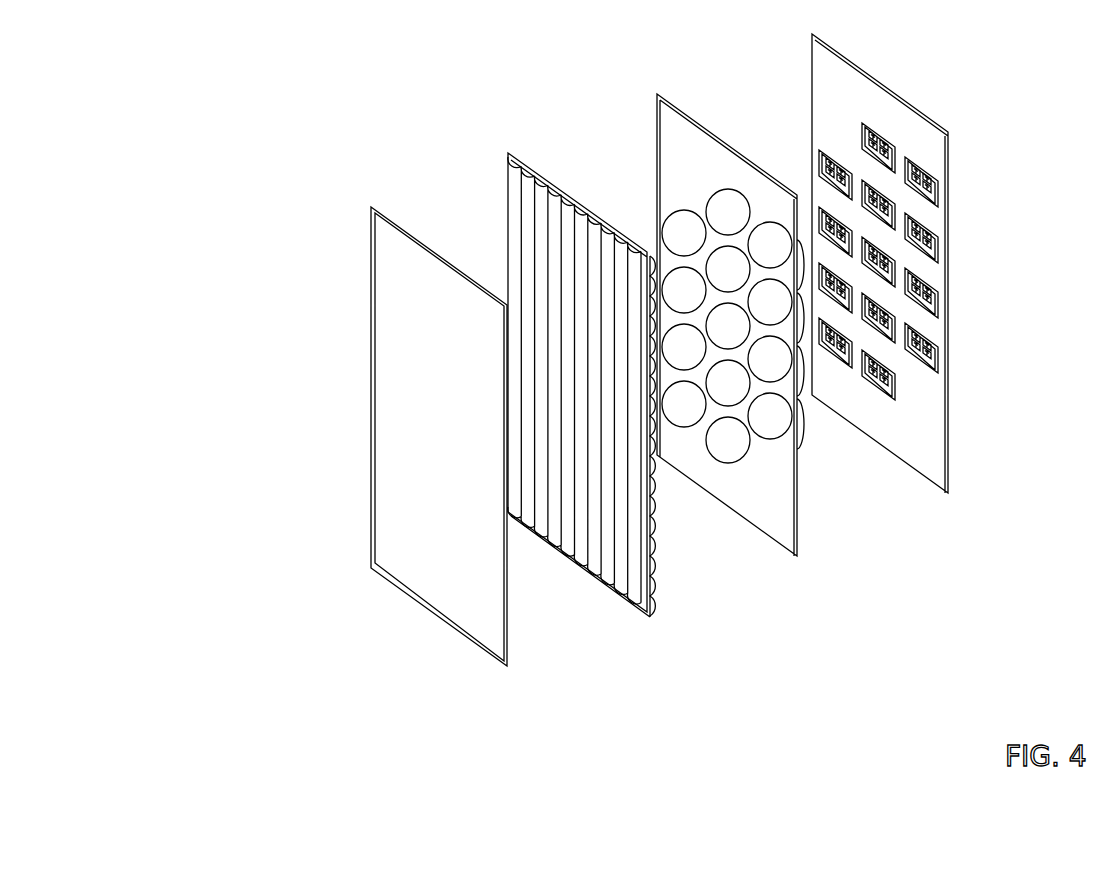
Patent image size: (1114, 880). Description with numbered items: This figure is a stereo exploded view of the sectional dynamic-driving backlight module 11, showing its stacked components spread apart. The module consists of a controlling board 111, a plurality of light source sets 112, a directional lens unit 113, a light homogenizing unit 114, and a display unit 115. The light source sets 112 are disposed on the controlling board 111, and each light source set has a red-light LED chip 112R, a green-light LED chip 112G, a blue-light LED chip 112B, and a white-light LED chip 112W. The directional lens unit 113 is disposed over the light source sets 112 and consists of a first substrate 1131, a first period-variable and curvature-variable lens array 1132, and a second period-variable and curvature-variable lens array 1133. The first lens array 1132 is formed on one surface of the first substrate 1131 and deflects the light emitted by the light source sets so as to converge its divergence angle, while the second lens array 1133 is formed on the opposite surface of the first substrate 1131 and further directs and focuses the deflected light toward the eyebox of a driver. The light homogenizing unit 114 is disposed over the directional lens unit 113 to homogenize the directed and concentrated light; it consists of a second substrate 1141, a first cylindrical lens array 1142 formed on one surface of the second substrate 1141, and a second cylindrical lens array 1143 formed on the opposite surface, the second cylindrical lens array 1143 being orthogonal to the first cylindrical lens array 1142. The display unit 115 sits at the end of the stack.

The sectional dynamic-driving backlight module 11 is at (363, 33).
The controlling board 111 is at (952, 278).
The light source sets 112 is at (936, 273).
The red-light LED chip 112R is at (920, 123).
The green-light LED chip 112G is at (969, 171).
The blue-light LED chip 112B is at (979, 192).
The white-light LED chip 112W is at (987, 212).
The directional lens unit 113 is at (794, 355).
The first substrate 1131 is at (786, 523).
The first period-variable and curvature-variable lens array 1132 is at (802, 413).
The second period-variable and curvature-variable lens array 1133 is at (728, 212).
The light homogenizing unit 114 is at (572, 398).
The second substrate 1141 is at (640, 610).
The first cylindrical lens array 1142 is at (655, 560).
The second cylindrical lens array 1143 is at (610, 572).
The display unit 115 is at (390, 252).